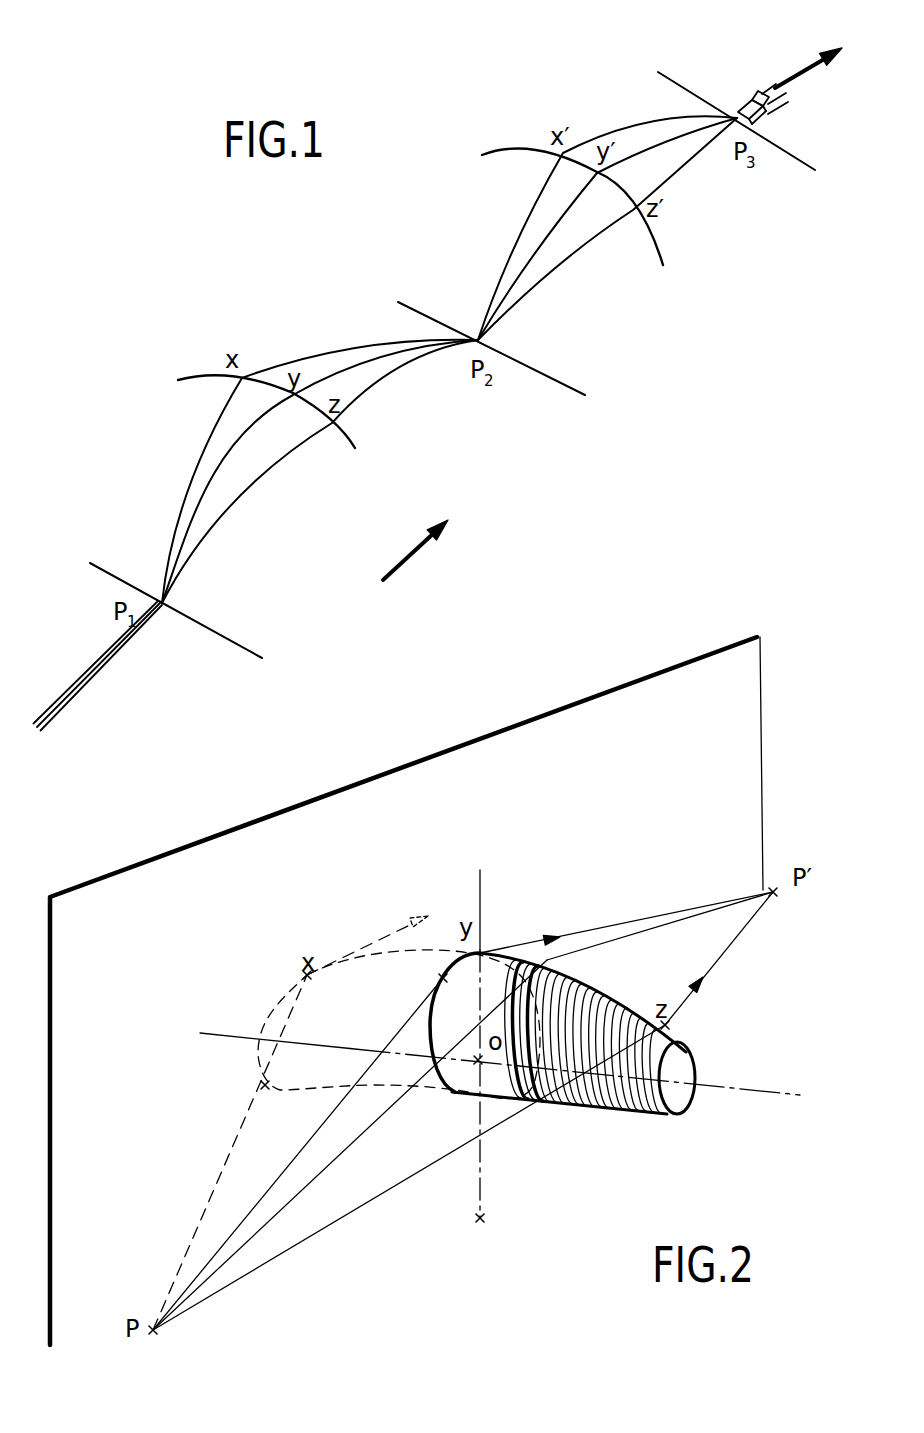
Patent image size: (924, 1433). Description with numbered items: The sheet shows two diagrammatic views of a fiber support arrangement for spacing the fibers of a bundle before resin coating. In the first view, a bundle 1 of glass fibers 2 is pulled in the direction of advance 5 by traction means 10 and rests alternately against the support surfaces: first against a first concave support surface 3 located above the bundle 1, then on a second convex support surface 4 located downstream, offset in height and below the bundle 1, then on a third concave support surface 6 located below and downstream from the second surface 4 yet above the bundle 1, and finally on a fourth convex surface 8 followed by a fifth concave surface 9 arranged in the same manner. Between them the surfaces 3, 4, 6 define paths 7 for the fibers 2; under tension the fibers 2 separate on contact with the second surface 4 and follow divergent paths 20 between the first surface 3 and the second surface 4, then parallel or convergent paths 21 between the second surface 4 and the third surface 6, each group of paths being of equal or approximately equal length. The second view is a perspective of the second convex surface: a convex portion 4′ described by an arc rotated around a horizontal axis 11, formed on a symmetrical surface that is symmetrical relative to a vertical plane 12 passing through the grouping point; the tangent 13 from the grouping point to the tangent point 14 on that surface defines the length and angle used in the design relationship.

In FIG. 1, the bundle 1 is at (85, 697).
In FIG. 1, the fibers 2 is at (200, 460).
In FIG. 1, the first concave support surface 3 is at (243, 642).
In FIG. 1, the second convex support surface 4 is at (355, 443).
In FIG. 1, the direction of advance 5 is at (415, 555).
In FIG. 1, the third concave support surface 6 is at (550, 373).
In FIG. 1, the paths 7 is at (303, 330).
In FIG. 1, the fourth convex surface 8 is at (660, 255).
In FIG. 1, the fifth concave surface 9 is at (793, 150).
In FIG. 1, the traction means 10 is at (763, 92).
In FIG. 2, the horizontal axis 11 is at (722, 1085).
In FIG. 2, the vertical plane 12 is at (738, 715).
In FIG. 2, the tangent 13 is at (297, 1158).
In FIG. 2, the tangent point 14 is at (443, 976).
In FIG. 1, the divergent paths 20 is at (138, 506).
In FIG. 1, the parallel or convergent paths 21 is at (386, 328).
In FIG. 2, the convex portion of the second surface 4′ is at (636, 974).